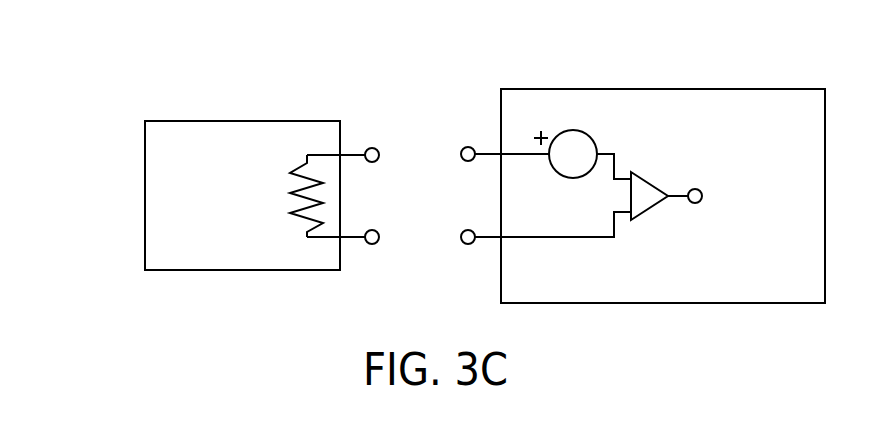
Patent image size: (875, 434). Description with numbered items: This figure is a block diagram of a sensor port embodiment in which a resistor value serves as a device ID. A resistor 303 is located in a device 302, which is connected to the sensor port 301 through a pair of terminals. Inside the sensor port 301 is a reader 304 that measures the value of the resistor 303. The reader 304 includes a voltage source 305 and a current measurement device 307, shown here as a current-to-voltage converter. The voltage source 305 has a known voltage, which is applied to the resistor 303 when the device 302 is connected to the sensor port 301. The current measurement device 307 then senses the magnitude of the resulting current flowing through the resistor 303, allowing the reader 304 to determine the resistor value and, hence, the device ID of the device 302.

The sensor port 301 is at (792, 89).
The device 302 is at (178, 121).
The resistor 303 is at (293, 209).
The reader 304 is at (631, 266).
The voltage source 305 is at (595, 138).
The current measurement device 307 is at (655, 208).